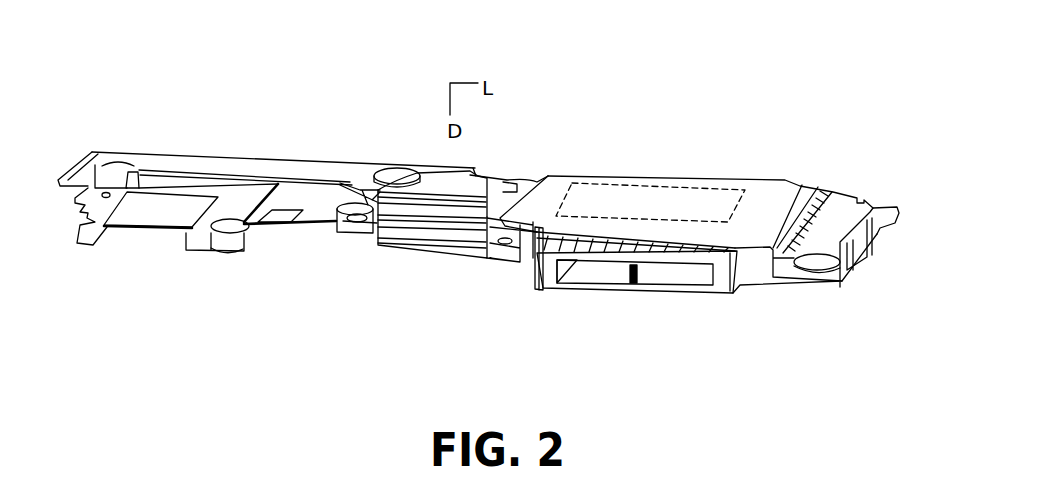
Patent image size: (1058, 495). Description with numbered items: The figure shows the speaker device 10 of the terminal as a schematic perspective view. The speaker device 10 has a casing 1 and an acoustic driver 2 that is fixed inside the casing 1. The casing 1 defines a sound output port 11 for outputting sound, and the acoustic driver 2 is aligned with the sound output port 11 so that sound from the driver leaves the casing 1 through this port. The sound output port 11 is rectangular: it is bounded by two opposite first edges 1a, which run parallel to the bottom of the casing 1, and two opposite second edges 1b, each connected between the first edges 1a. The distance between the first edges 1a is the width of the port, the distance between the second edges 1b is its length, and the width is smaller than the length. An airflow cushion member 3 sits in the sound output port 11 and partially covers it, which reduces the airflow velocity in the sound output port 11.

The speaker device 10 is at (748, 88).
The casing 1 is at (685, 268).
The acoustic driver 2 is at (692, 202).
The airflow cushion member 3 is at (642, 278).
The sound output port 11 is at (598, 272).
The first edges 1a is at (558, 276).
The second edges 1b is at (545, 272).